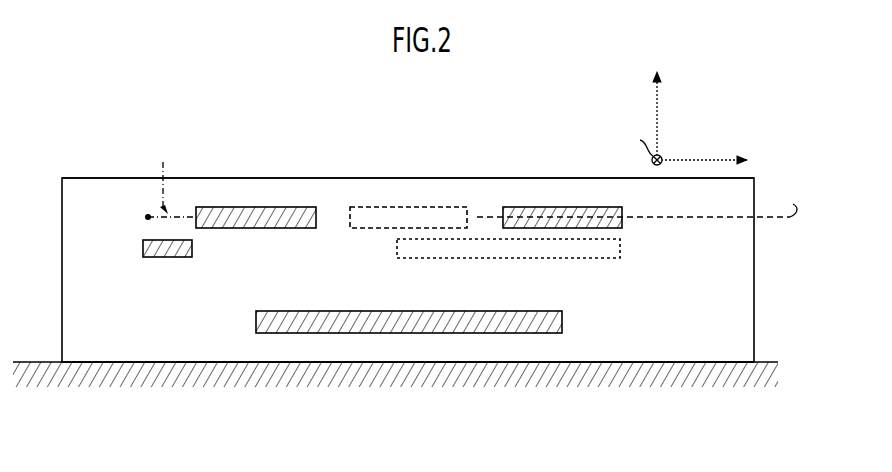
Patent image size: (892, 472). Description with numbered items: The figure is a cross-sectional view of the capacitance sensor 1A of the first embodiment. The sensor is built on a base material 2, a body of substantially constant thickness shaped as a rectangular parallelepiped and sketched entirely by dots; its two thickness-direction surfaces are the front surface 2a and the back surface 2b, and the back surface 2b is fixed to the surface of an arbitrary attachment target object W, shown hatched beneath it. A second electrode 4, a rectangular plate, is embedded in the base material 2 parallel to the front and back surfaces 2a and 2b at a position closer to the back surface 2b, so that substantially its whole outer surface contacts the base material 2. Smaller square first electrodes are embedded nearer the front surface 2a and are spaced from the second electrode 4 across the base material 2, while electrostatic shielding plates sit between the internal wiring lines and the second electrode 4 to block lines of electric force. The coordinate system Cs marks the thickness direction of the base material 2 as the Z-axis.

The capacitance sensor 1A is at (212, 122).
The base material 2 is at (87, 200).
The front surface of base material 2a is at (293, 178).
The back surface of base material 2b is at (298, 362).
The second electrode 4 is at (467, 333).
The attachment target object W is at (43, 362).
The coordinate system Cs is at (686, 115).